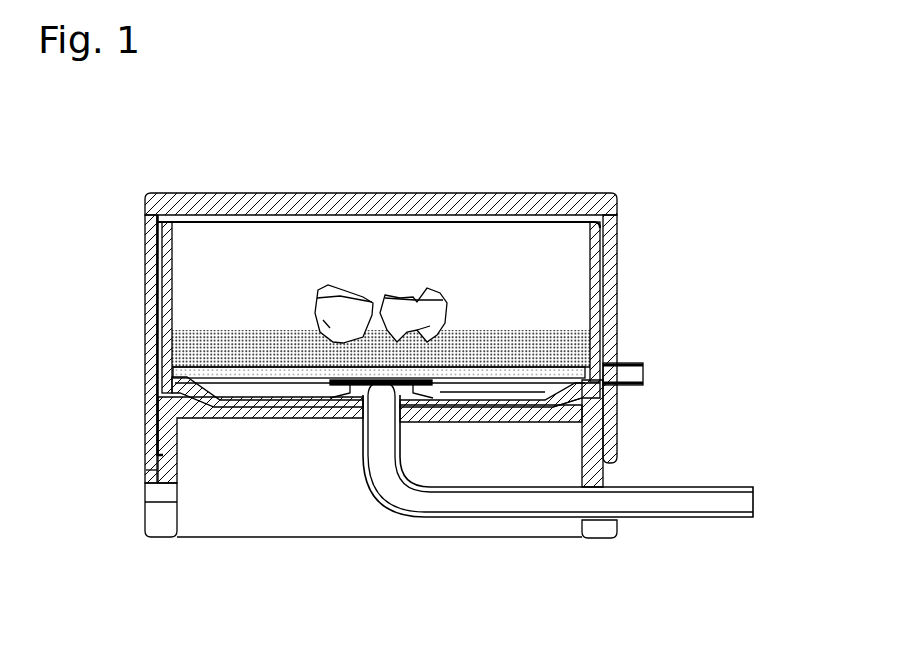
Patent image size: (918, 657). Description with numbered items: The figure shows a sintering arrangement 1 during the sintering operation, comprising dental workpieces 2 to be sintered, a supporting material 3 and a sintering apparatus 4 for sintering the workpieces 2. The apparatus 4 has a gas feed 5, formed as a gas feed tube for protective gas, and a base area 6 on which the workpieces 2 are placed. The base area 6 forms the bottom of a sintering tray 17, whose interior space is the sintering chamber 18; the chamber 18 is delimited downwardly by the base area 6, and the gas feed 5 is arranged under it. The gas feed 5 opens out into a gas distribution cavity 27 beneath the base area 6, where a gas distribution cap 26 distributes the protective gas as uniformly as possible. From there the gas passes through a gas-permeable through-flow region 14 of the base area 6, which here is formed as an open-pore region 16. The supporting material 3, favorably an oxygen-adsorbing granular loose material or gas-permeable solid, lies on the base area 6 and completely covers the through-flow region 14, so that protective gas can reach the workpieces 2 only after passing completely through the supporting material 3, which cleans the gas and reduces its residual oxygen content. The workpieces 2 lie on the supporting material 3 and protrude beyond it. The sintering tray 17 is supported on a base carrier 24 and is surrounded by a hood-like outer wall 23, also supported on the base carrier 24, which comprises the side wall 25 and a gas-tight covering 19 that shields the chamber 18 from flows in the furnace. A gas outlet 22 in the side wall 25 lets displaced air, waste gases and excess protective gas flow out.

The arrangement 1 is at (659, 181).
The dental workpiece 2 is at (410, 310).
The supporting material 3 is at (593, 347).
The sintering apparatus 4 is at (624, 300).
The gas feed 5 is at (386, 470).
The base area 6 is at (533, 365).
The through-flow region 14 is at (265, 380).
The open-pore region 16 is at (379, 490).
The sintering tray 17 is at (168, 343).
The sintering chamber 18 is at (244, 246).
The covering 19 is at (517, 205).
The gas outlet 22 is at (637, 372).
The outer wall 23 is at (146, 243).
The base carrier 24 is at (150, 470).
The side wall 25 is at (616, 262).
The gas distribution cap 26 is at (337, 390).
The gas distribution cavity 27 is at (483, 392).